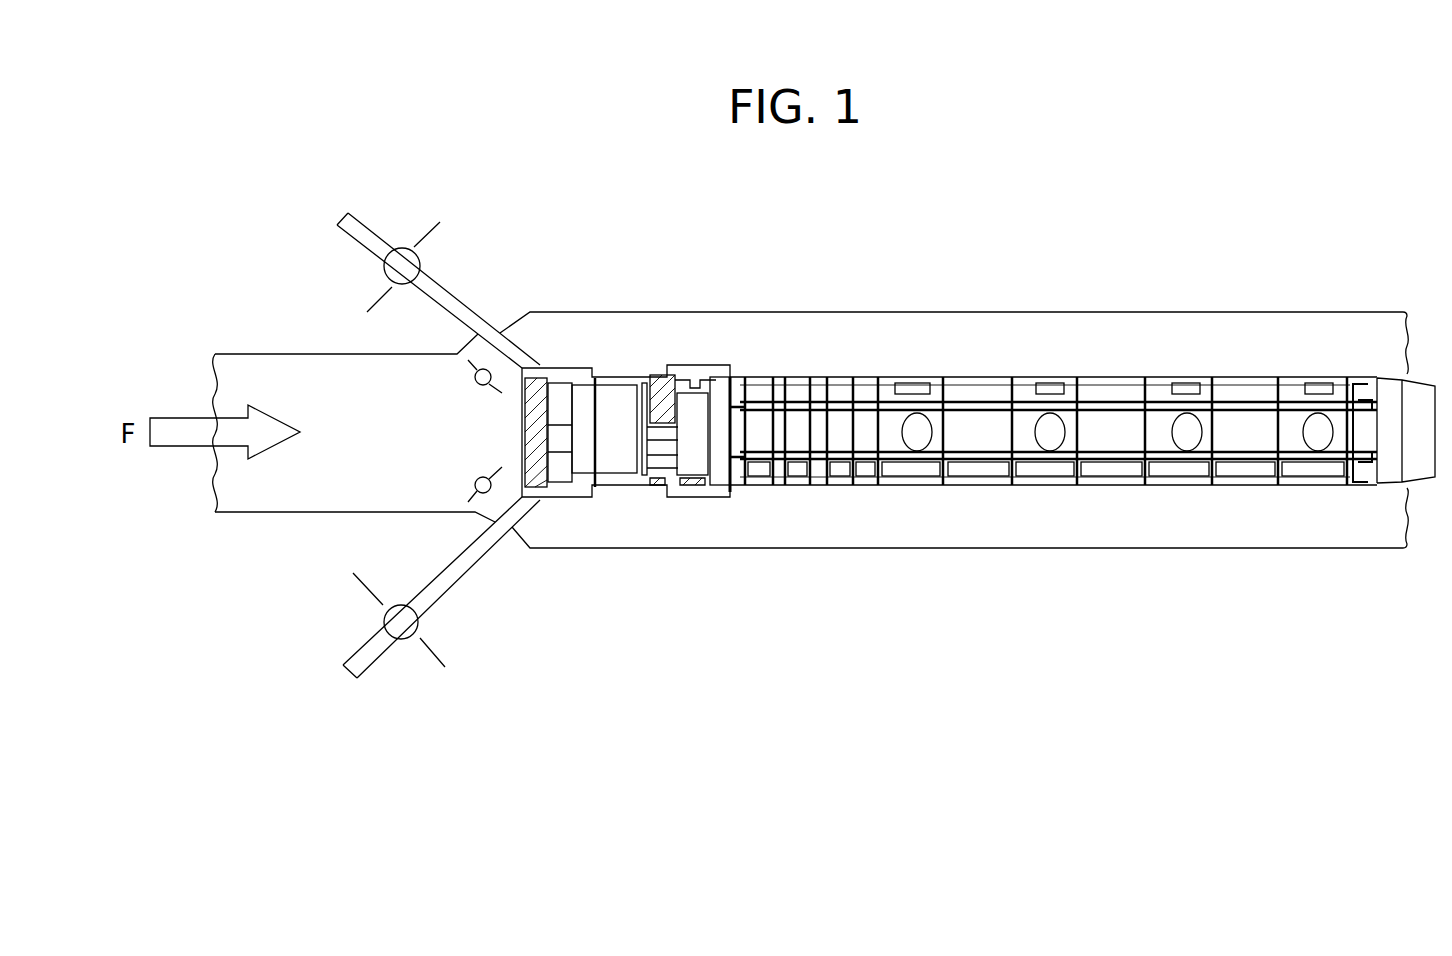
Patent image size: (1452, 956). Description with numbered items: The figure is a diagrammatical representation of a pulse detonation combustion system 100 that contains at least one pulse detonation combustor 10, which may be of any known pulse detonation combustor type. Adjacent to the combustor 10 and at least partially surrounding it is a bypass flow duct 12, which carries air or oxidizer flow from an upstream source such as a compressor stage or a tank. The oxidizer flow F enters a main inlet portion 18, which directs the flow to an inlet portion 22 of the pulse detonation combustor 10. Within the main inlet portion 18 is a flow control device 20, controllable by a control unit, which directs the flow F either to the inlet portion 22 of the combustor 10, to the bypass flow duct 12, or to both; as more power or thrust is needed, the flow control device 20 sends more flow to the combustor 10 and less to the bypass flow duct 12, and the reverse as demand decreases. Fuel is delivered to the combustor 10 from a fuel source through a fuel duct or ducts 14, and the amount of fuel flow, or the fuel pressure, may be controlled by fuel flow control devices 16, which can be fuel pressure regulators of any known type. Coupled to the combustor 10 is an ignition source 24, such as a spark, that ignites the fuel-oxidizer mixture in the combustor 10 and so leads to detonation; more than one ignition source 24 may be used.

The pulse detonation combustor 10 is at (1186, 380).
The bypass flow duct 12 is at (786, 320).
The fuel duct 14 is at (346, 213).
The fuel flow control device 16 is at (432, 222).
The main inlet portion 18 is at (278, 370).
The flow control device 20 is at (472, 492).
The inlet portion 22 is at (468, 427).
The ignition source 24 is at (708, 492).
The pulse detonation combustion system 100 is at (910, 288).